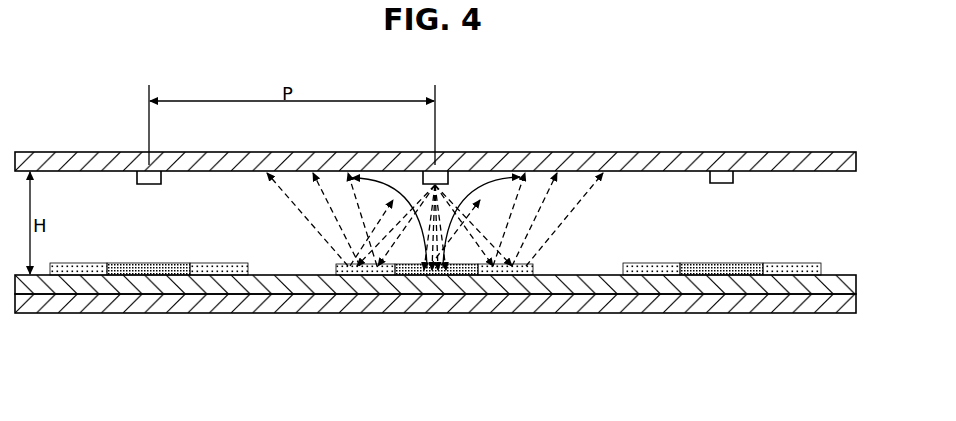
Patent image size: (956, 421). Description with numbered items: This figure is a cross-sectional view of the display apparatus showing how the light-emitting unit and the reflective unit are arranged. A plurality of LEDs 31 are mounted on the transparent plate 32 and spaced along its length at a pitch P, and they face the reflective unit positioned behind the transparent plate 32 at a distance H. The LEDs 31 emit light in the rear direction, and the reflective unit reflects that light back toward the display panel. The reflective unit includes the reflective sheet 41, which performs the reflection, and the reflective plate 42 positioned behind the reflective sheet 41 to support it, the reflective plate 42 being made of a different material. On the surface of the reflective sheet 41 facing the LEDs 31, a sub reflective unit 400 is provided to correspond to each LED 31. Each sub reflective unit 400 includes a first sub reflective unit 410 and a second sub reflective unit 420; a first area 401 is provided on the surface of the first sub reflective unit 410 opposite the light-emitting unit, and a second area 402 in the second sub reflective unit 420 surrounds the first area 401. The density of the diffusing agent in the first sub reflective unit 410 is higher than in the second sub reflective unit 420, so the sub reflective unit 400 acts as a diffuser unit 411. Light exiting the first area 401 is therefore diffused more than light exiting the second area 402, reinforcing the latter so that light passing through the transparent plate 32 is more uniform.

The transparent plate 32 is at (673, 152).
The LED 31 is at (733, 177).
The reflective sheet 41 is at (590, 283).
The reflective plate 42 is at (605, 307).
The sub reflective unit 400 is at (135, 263).
The first area 401 is at (724, 263).
The second area 402 is at (657, 263).
The first sub reflective unit 410 is at (462, 272).
The diffuser unit 411 is at (424, 326).
The second sub reflective unit 420 is at (345, 272).